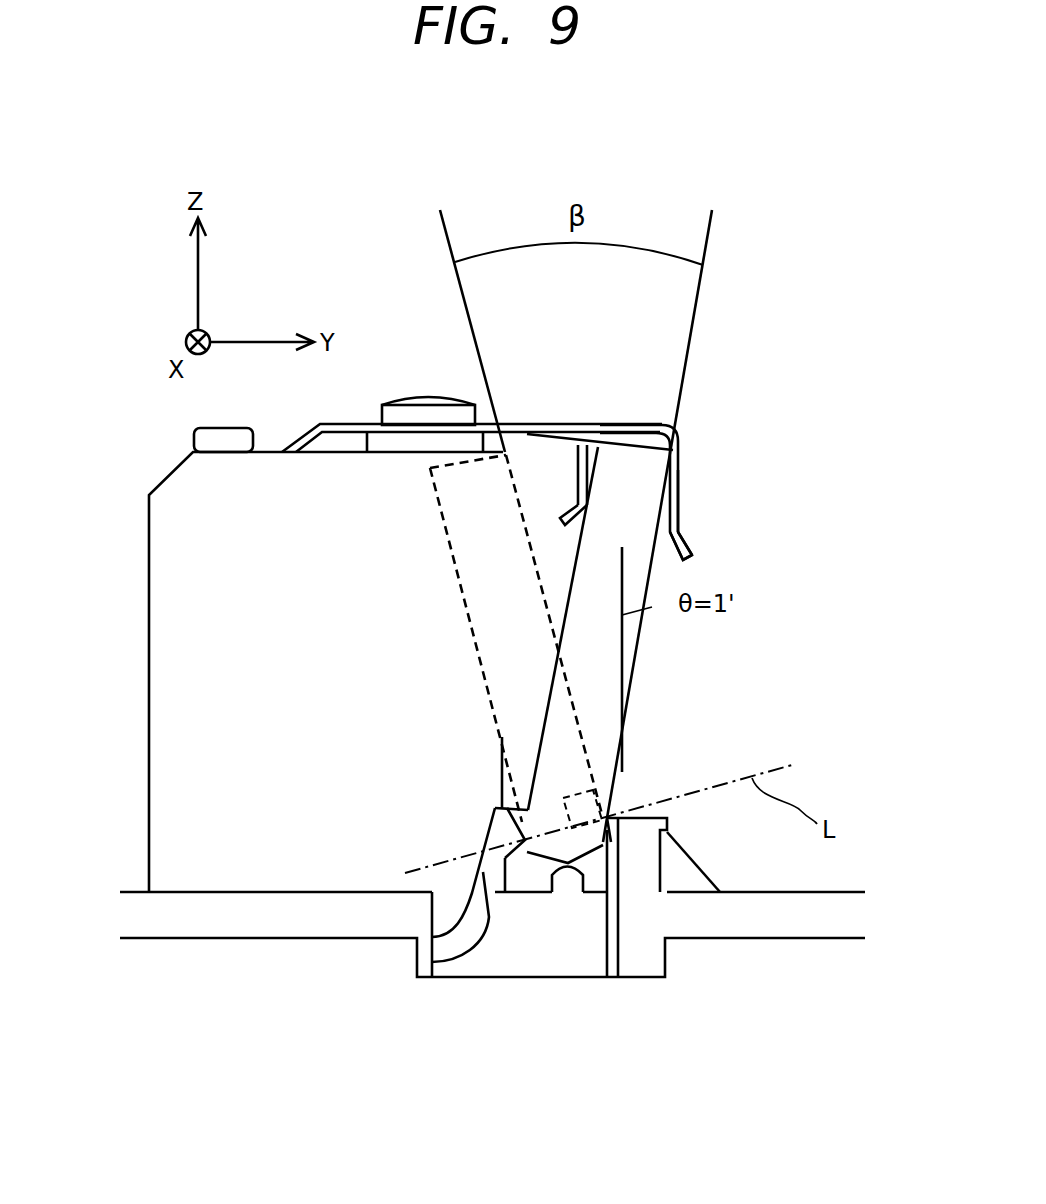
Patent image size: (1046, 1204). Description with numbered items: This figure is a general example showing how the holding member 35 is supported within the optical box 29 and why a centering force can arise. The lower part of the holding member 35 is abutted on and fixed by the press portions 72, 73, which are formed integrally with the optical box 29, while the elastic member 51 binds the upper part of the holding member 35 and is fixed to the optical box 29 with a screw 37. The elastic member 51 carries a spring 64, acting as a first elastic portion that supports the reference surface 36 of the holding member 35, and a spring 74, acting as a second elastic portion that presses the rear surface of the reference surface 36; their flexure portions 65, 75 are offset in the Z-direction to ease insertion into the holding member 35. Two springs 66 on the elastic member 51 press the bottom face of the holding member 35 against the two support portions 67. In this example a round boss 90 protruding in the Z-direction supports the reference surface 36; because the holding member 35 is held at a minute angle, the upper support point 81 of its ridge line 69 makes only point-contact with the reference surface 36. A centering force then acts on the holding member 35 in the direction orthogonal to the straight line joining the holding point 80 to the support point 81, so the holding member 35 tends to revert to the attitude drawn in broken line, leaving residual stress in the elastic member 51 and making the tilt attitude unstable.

The optical box 29 is at (185, 712).
The screw 37 is at (420, 410).
The elastic member 51 is at (615, 425).
The springs 66 is at (672, 425).
The spring 64 is at (678, 505).
The flexure portion 65 is at (680, 533).
The holding member 35 is at (630, 503).
The spring 74 is at (580, 477).
The flexure portion 75 is at (577, 495).
The reference surface 36 is at (636, 648).
The support point 81 is at (607, 818).
The holding point 80 is at (522, 838).
The press portion 72 is at (462, 938).
The press portion 73 is at (487, 872).
The support portions 67 is at (566, 880).
The ridge line 69 is at (614, 855).
The round boss 90 is at (628, 865).